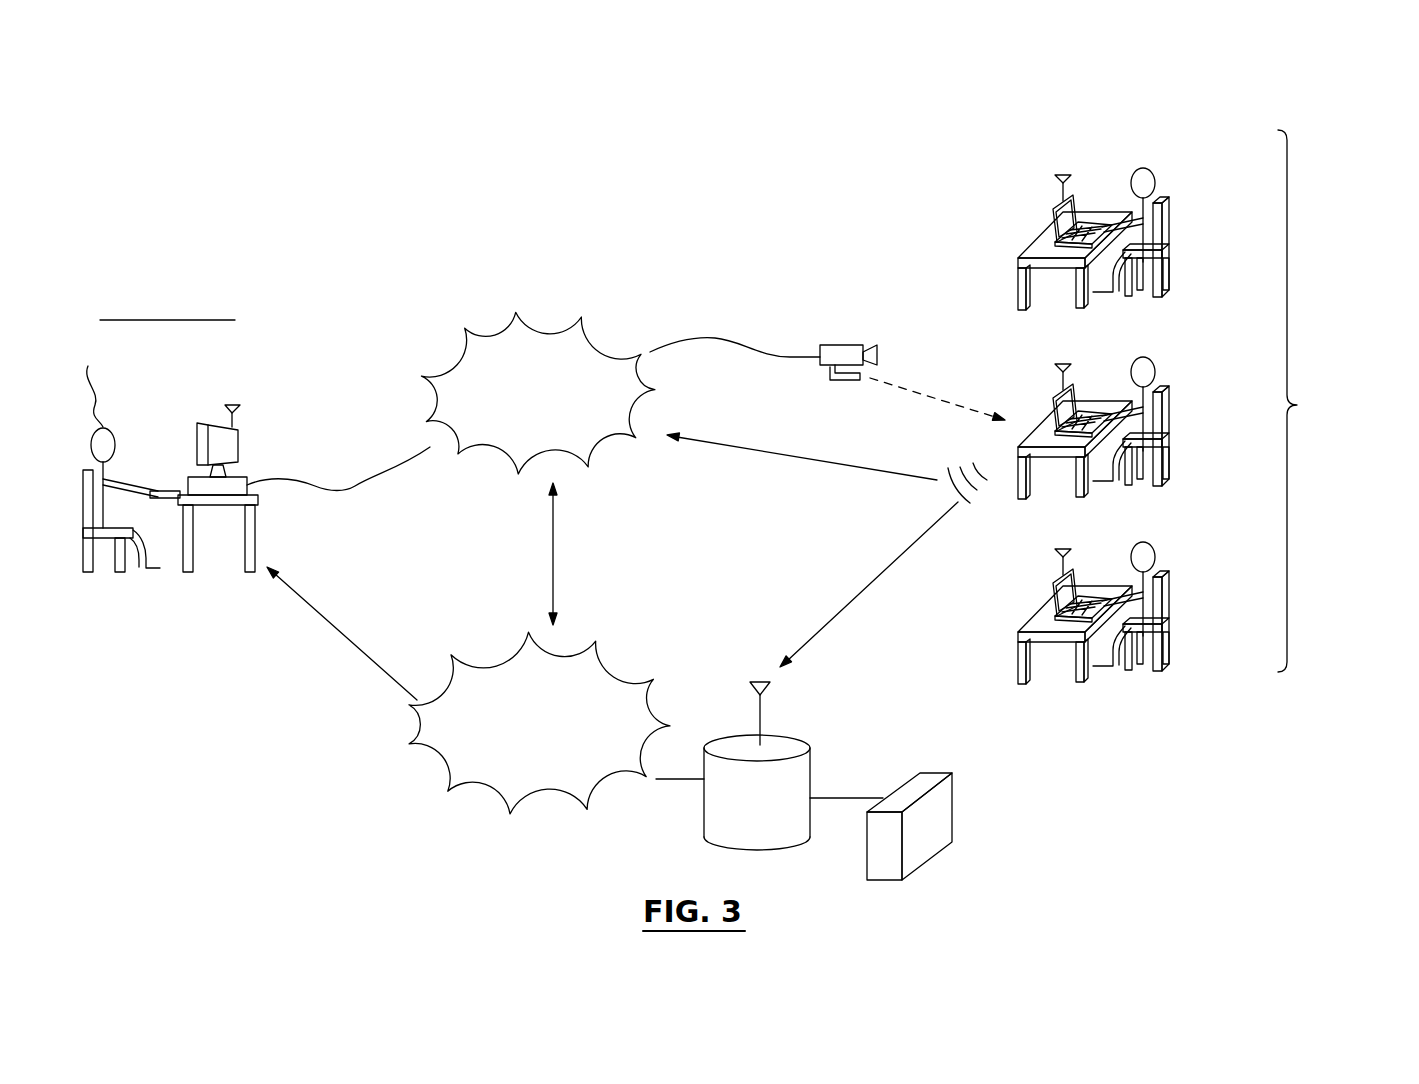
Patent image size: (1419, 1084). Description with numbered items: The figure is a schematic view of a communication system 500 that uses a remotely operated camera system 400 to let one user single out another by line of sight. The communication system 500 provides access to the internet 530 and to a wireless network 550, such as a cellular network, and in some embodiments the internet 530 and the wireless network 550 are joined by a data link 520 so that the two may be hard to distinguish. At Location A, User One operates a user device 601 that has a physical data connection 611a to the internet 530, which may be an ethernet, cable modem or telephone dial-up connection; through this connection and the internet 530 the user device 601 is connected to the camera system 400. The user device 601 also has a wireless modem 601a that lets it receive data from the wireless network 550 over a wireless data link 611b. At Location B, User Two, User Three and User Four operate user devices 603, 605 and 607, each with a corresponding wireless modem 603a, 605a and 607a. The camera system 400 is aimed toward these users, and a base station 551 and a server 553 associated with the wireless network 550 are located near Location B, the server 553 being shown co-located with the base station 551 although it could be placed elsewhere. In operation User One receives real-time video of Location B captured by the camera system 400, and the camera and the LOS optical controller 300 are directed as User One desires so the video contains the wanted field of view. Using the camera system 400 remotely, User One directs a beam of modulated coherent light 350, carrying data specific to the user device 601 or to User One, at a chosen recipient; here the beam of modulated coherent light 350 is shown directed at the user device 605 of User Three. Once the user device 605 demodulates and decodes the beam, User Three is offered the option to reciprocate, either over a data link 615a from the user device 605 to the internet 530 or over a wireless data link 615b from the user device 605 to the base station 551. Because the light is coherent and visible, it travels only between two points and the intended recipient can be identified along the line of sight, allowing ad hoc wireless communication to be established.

The communication system 500 is at (235, 156).
The user device 601 is at (217, 425).
The wireless modem 601a is at (242, 410).
The physical data connection 611a is at (340, 490).
The wireless data link 611b is at (347, 633).
The data link 520 is at (553, 548).
The internet 530 is at (515, 420).
The wireless network 550 is at (516, 770).
The LOS optical controller 300 is at (837, 383).
The camera system 400 is at (845, 342).
The beam of modulated coherent light 350 is at (925, 395).
The data link 615a is at (790, 458).
The wireless data link 615b is at (855, 597).
The user device 603 is at (1050, 218).
The wireless modem 603a is at (1072, 180).
The user device 605 is at (1037, 398).
The wireless modem 605a is at (1124, 360).
The user device 607 is at (1037, 583).
The wireless modem 607a is at (1124, 545).
The base station 551 is at (800, 733).
The server 553 is at (897, 783).